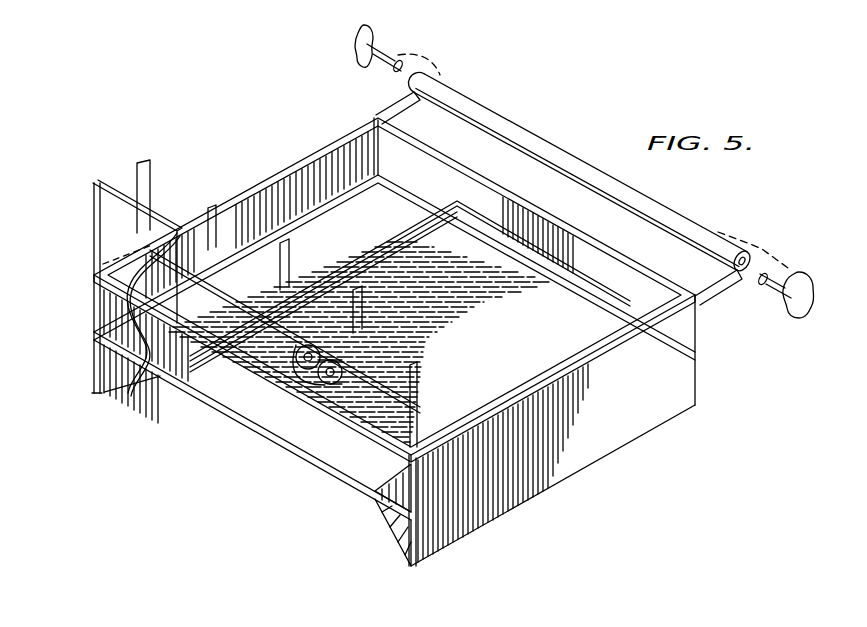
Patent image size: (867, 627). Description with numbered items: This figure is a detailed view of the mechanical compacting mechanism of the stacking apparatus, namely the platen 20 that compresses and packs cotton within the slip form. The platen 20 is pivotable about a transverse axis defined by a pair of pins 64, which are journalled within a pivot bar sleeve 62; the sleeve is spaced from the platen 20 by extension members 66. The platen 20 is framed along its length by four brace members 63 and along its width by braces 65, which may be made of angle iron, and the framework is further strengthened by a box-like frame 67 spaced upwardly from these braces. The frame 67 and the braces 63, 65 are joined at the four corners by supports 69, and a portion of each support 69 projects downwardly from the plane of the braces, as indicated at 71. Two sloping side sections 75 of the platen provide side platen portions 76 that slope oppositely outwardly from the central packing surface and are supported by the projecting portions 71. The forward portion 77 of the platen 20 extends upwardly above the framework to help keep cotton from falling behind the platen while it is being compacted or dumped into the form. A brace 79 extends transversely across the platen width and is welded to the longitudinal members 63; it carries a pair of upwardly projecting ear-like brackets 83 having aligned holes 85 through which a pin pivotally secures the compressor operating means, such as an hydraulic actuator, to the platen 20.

The platen 20 is at (262, 174).
The pivot bar sleeve 62 is at (667, 212).
The brace members 63 is at (407, 518).
The pins 64 is at (393, 58).
The braces 65 is at (263, 430).
The extension members 66 is at (412, 100).
The box-like frame 67 is at (318, 142).
The supports 69 is at (368, 150).
The projecting portion 71 is at (91, 375).
The sloping side sections 75 is at (240, 212).
The side platen portions 76 is at (118, 394).
The forward portion 77 is at (113, 238).
The brace 79 is at (421, 427).
The ear-like brackets 83 is at (350, 366).
The holes 85 is at (310, 350).